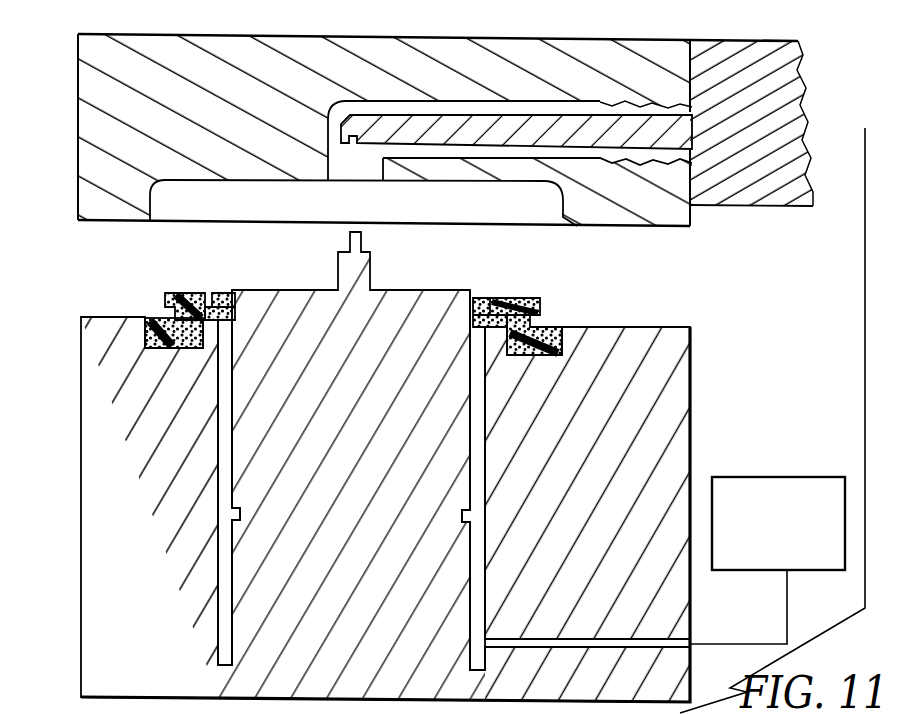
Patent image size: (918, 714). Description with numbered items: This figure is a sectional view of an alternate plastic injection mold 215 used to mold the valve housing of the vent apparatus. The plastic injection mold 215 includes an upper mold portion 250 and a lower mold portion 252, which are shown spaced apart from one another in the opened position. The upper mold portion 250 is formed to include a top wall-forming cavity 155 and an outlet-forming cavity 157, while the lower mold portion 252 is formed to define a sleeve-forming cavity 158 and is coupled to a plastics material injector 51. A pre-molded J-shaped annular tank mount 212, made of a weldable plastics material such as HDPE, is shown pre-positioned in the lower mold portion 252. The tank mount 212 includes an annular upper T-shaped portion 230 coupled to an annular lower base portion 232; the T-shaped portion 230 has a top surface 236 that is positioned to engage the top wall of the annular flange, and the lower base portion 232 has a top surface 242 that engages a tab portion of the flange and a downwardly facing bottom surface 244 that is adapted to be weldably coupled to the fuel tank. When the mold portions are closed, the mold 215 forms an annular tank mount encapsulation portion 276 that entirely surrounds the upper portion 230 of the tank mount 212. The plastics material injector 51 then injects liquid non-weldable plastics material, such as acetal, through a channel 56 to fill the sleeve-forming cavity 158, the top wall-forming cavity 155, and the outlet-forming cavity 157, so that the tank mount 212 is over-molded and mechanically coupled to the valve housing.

The plastic injection mold 215 is at (49, 100).
The upper mold portion 250 is at (365, 32).
The outlet-forming cavity 157 is at (455, 104).
The top wall-forming cavity 155 is at (190, 181).
The annular tank mount encapsulation portion 276 is at (547, 208).
The lower mold portion 252 is at (70, 461).
The sleeve-forming cavity 158 is at (222, 538).
The bottom surface 244 is at (546, 356).
The channel 56 is at (637, 645).
The lower base portion 232 is at (140, 339).
The tank mount 212 is at (157, 291).
The upper T-shaped portion 230 is at (201, 285).
The top surface 236 is at (517, 299).
The top surface 242 is at (548, 326).
The plastics material injector 51 is at (752, 477).